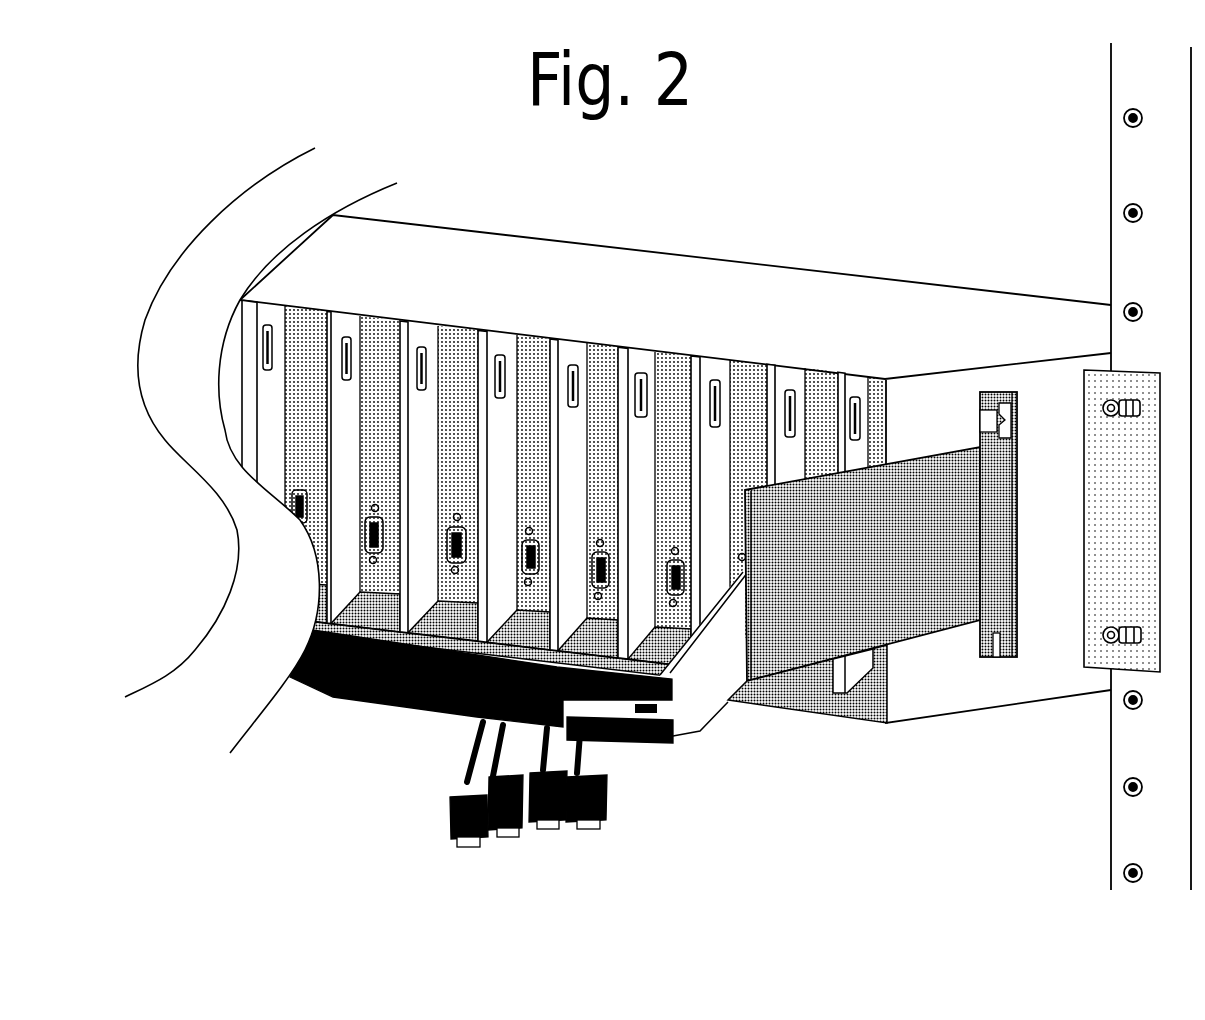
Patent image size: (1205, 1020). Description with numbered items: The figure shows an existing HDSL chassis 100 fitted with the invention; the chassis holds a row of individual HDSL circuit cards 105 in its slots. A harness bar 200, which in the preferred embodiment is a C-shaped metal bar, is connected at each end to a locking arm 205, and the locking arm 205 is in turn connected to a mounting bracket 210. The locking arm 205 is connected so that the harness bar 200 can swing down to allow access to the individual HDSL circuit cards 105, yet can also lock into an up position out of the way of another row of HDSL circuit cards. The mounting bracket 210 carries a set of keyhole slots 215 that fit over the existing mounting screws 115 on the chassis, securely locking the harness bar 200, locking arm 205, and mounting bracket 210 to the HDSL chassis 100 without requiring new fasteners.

The chassis 100 is at (663, 277).
The HDSL circuit cards 105 is at (538, 353).
The mounting screws 115 is at (1135, 420).
The harness bar 200 is at (402, 712).
The locking arm 205 is at (717, 683).
The mounting bracket 210 is at (862, 564).
The keyhole slots 215 is at (1010, 428).